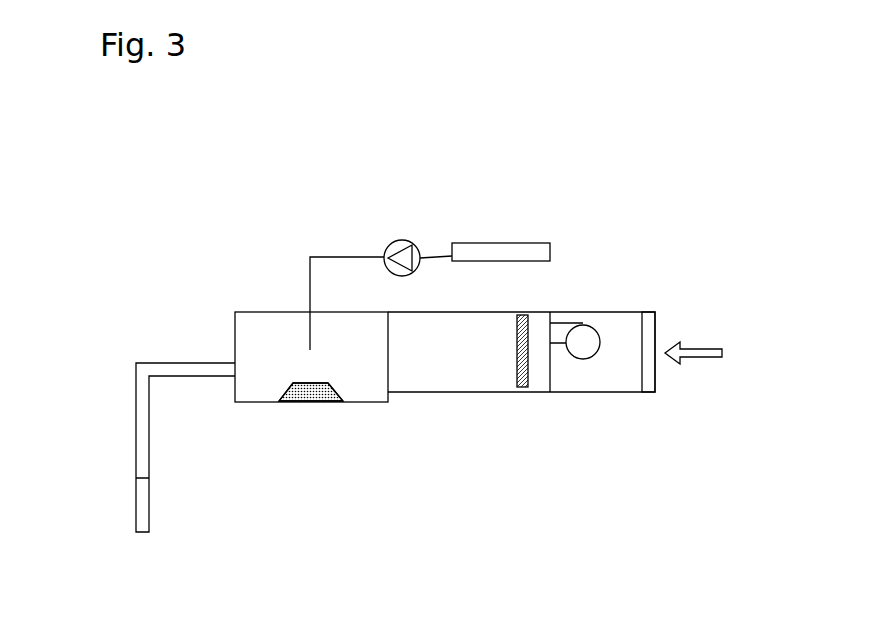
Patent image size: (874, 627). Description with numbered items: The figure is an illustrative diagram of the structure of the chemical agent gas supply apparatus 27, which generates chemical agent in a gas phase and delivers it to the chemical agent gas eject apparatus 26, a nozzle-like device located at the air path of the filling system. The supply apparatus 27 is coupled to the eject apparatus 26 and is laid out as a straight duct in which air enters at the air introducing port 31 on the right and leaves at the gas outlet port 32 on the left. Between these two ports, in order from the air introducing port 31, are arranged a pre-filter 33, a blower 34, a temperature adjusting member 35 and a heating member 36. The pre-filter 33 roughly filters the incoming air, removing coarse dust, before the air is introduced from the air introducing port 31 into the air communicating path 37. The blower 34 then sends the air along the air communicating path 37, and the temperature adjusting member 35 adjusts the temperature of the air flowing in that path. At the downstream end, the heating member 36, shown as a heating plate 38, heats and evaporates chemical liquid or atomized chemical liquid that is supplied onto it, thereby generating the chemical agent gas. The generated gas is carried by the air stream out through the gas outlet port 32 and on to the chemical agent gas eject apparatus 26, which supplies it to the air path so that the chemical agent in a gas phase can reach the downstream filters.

The chemical agent gas eject apparatus 26 is at (136, 502).
The chemical agent gas supply apparatus 27 is at (242, 292).
The air introducing port 31 is at (576, 371).
The gas outlet port 32 is at (235, 367).
The pre-filter 33 is at (650, 375).
The blower 34 is at (582, 352).
The temperature adjusting member 35 is at (513, 360).
The heating member 36 is at (318, 384).
The air communicating path 37 is at (445, 372).
The heating plate 38 is at (353, 440).